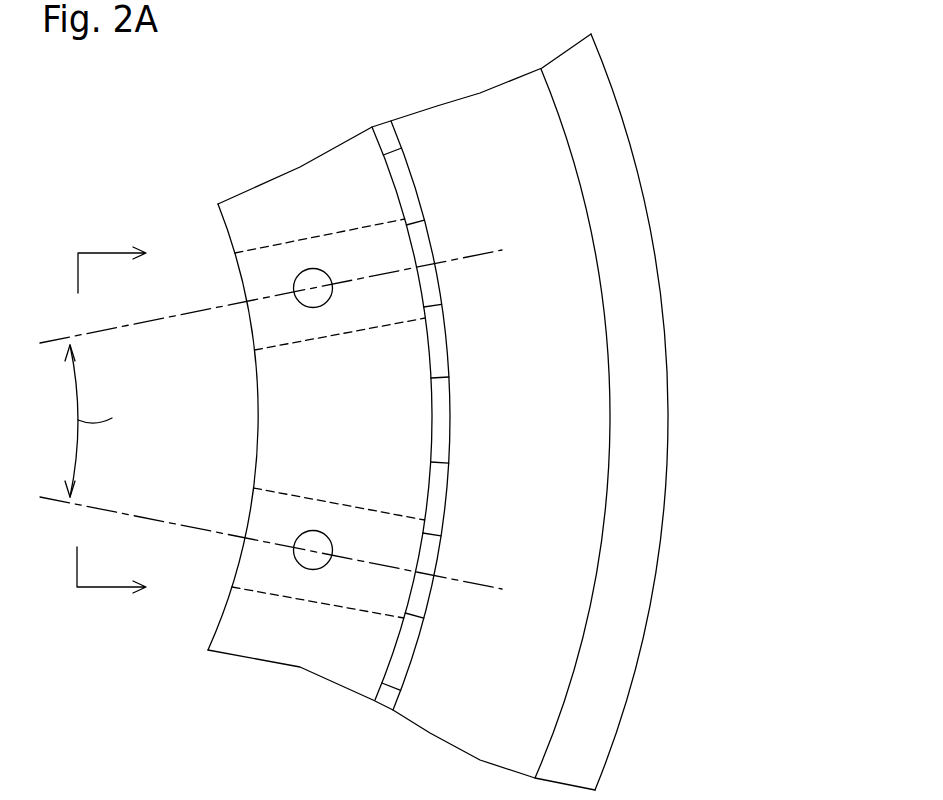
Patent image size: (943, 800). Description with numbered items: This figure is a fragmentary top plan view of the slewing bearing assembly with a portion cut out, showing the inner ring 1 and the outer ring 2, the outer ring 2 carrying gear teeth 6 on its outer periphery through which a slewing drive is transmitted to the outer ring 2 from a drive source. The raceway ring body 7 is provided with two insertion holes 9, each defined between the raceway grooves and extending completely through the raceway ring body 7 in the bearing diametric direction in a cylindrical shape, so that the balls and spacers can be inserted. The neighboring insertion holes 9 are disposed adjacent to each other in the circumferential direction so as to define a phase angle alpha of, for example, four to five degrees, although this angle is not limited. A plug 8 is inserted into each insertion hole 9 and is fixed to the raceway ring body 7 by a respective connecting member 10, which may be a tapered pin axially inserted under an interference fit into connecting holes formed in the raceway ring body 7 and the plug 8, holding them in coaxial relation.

The inner ring 1 is at (190, 665).
The outer ring 2 is at (453, 722).
The gear teeth 6 is at (632, 578).
The raceway ring body 7 is at (243, 628).
The plug 8 is at (358, 253).
The insertion hole 9 is at (300, 343).
The connecting member 10 is at (313, 268).